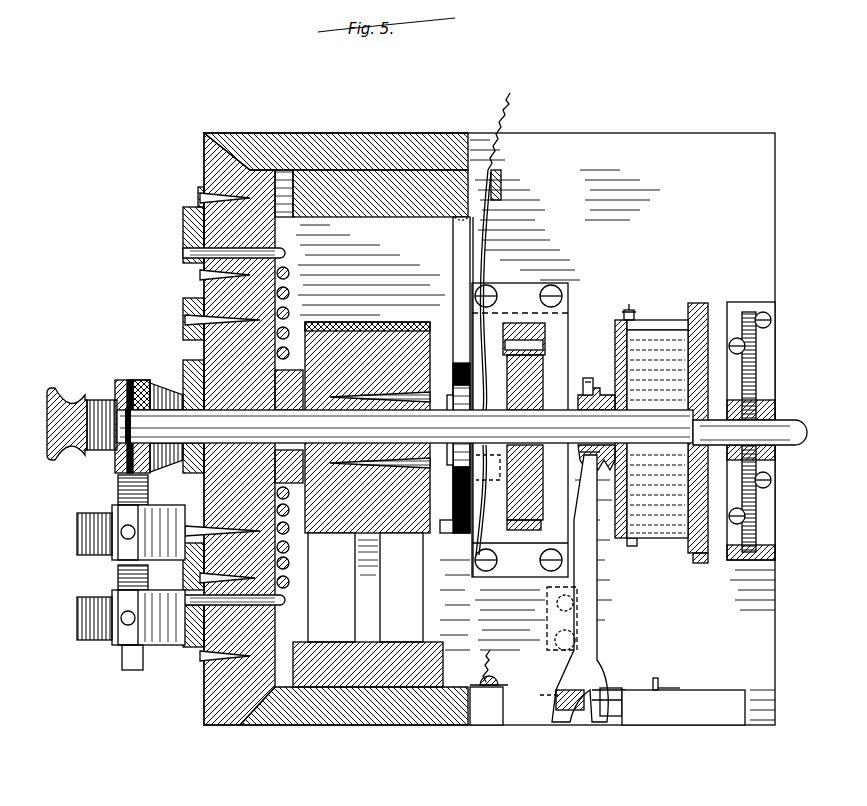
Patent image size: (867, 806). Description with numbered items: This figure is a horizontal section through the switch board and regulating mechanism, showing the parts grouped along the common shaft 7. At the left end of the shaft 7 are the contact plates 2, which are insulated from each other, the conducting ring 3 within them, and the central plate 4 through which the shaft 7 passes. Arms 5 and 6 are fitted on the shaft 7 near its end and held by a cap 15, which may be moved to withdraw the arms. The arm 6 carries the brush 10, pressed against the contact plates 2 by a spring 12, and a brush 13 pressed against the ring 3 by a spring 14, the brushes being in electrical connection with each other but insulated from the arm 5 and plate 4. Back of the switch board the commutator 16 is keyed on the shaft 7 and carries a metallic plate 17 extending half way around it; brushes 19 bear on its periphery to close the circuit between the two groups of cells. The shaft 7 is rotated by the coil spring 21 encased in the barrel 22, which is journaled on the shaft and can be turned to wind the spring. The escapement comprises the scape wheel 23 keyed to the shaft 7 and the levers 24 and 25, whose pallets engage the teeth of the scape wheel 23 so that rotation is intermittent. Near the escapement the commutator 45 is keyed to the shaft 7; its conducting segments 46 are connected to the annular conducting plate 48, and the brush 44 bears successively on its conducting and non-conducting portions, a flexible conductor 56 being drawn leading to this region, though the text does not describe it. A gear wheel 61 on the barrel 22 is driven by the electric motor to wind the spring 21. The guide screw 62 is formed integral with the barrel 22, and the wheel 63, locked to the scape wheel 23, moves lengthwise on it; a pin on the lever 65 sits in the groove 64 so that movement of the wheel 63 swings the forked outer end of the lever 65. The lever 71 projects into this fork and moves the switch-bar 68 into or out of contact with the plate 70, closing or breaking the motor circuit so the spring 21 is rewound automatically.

The contact plates 2 is at (187, 207).
The ring 3 is at (190, 298).
The central plate 4 is at (183, 372).
The arm 5 is at (143, 380).
The arm 6 is at (113, 466).
The shaft 7 is at (462, 427).
The brush 10 is at (157, 610).
The spring 12 is at (115, 580).
The brush 13 is at (160, 522).
The spring 14 is at (115, 495).
The cap 15 is at (68, 418).
The commutator 16 is at (367, 427).
The metallic plate 17 is at (410, 325).
The brushes 19 is at (368, 610).
The coil spring 21 is at (660, 520).
The barrel 22 is at (652, 330).
The scape wheel 23 is at (540, 392).
The lever 24 is at (520, 325).
The lever 25 is at (525, 530).
The brush 44 is at (462, 263).
The commutator 45 is at (452, 517).
The conducting segments 46 is at (442, 446).
The annular conducting plate 48 is at (480, 472).
The flexible cable 56 is at (496, 288).
The gear wheel 61 is at (724, 380).
The guide screw 62 is at (600, 470).
The wheel 63 is at (598, 384).
The groove 64 is at (588, 378).
The lever 65 is at (590, 518).
The switch-bar 68 is at (552, 690).
The plate 70 is at (498, 682).
The lever 71 is at (600, 688).